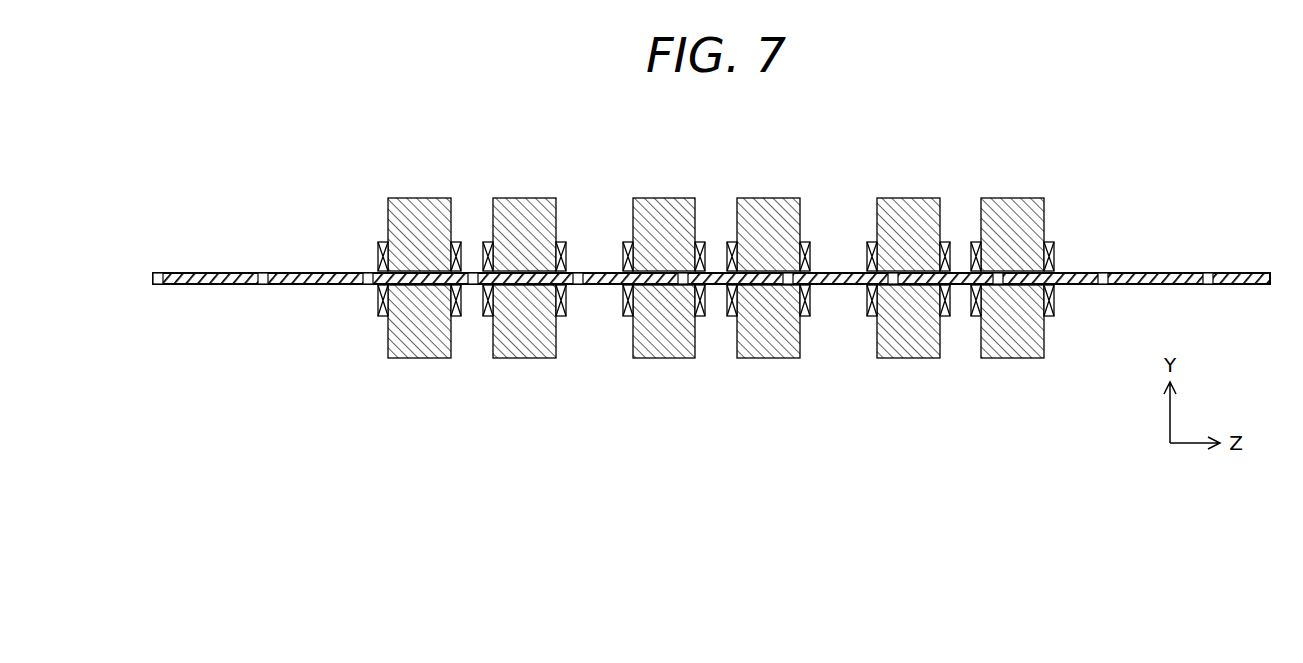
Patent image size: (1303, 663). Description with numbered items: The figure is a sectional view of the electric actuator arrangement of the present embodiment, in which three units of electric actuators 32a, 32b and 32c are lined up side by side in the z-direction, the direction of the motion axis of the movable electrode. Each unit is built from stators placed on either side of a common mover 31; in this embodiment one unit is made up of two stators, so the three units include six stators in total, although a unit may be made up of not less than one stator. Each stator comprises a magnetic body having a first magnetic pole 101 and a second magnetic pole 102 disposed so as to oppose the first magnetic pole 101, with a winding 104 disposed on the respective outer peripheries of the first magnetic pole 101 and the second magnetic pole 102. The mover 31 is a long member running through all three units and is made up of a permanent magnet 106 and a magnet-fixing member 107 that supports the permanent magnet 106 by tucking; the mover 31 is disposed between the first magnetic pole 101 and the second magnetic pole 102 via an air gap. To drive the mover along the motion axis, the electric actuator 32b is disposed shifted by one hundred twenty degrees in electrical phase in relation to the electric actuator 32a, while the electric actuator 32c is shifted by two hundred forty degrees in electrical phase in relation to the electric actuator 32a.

The mover 31 is at (98, 182).
The magnet-fixing member 107 is at (155, 272).
The permanent magnet 106 is at (238, 272).
The first magnetic pole 101 is at (427, 207).
The second magnetic pole 102 is at (518, 347).
The winding 104 is at (378, 262).
The electric actuator 32a is at (463, 315).
The electric actuator 32b is at (617, 442).
The electric actuator 32c is at (872, 442).